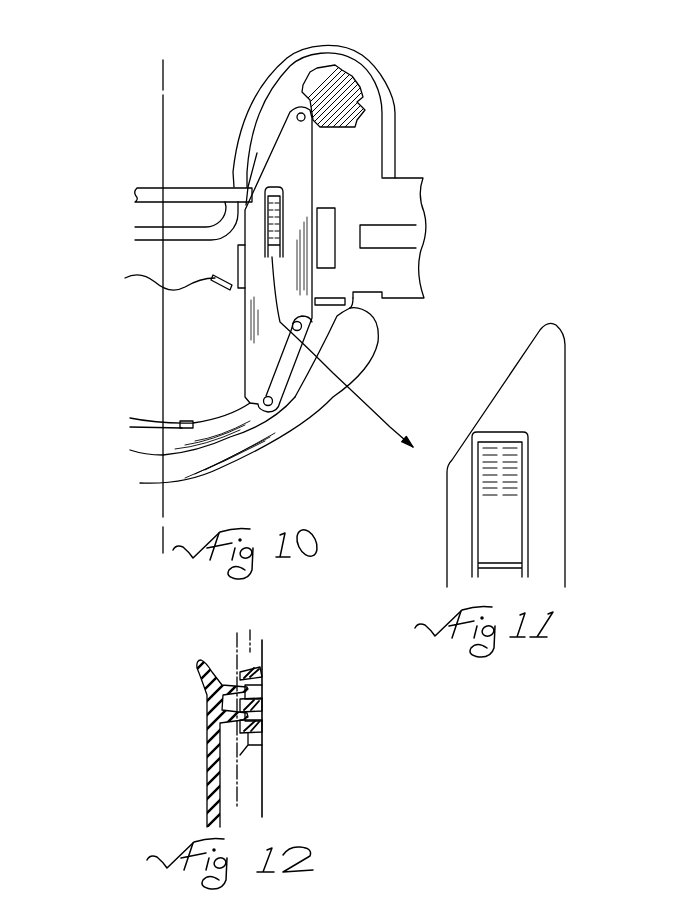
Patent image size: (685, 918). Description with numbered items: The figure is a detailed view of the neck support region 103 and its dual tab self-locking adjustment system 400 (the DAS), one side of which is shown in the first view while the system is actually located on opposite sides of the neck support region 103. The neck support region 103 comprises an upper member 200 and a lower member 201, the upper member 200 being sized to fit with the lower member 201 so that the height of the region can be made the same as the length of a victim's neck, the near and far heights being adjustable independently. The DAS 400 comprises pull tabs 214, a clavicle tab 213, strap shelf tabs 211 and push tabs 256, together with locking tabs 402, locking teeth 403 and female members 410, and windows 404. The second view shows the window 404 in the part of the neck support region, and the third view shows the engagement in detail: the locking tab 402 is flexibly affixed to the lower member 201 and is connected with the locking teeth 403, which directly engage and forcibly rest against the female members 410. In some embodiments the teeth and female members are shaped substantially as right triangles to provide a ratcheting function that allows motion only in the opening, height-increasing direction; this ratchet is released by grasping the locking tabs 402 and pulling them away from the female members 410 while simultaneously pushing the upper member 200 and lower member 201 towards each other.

In FIG. 10, the upper member 200 is at (287, 102).
In FIG. 10, the neck support region 103 is at (190, 248).
In FIG. 10, the dual tab self-locking adjustment system 400 is at (272, 190).
In FIG. 10, the locking tab 402 is at (277, 212).
In FIG. 11, the locking tab 402 is at (507, 530).
In FIG. 12, the locking tab 402 is at (208, 700).
In FIG. 10, the strap shelf tab 211 is at (225, 280).
In FIG. 10, the push tab 256 is at (427, 335).
In FIG. 10, the pull tab 214 is at (388, 382).
In FIG. 10, the lower member 201 is at (267, 370).
In FIG. 10, the clavicle tab 213 is at (185, 425).
In FIG. 11, the window 404 is at (478, 502).
In FIG. 12, the female member 410 is at (262, 673).
In FIG. 12, the locking tooth 403 is at (248, 690).